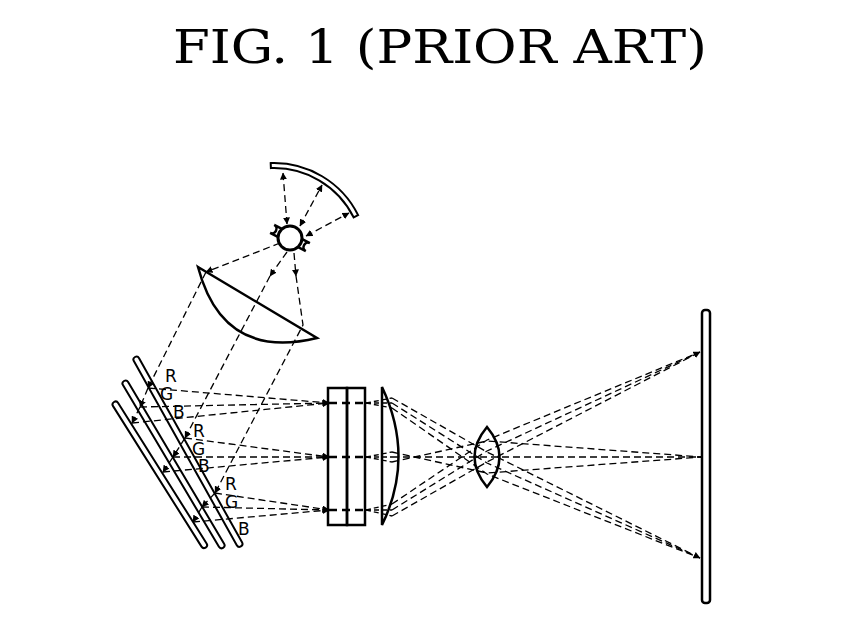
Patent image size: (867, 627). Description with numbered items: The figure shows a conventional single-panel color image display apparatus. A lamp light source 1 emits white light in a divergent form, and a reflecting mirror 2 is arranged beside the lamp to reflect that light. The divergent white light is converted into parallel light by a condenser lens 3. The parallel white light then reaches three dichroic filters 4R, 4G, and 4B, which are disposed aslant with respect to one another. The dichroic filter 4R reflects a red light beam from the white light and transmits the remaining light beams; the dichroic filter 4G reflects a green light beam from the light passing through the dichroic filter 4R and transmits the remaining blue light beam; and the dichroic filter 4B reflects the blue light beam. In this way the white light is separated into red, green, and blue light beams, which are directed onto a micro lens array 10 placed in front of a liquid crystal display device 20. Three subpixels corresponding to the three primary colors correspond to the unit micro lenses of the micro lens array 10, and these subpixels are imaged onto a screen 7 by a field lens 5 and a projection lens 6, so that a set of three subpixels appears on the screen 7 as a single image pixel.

The lamp light source 1 is at (262, 218).
The reflecting mirror 2 is at (298, 164).
The condenser lens 3 is at (197, 268).
The dichroic filter 4R is at (134, 356).
The dichroic filter 4G is at (122, 381).
The dichroic filter 4B is at (110, 402).
The micro lens array 10 is at (337, 526).
The liquid crystal display device 20 is at (359, 526).
The field lens 5 is at (398, 500).
The projection lens 6 is at (487, 487).
The screen 7 is at (712, 585).